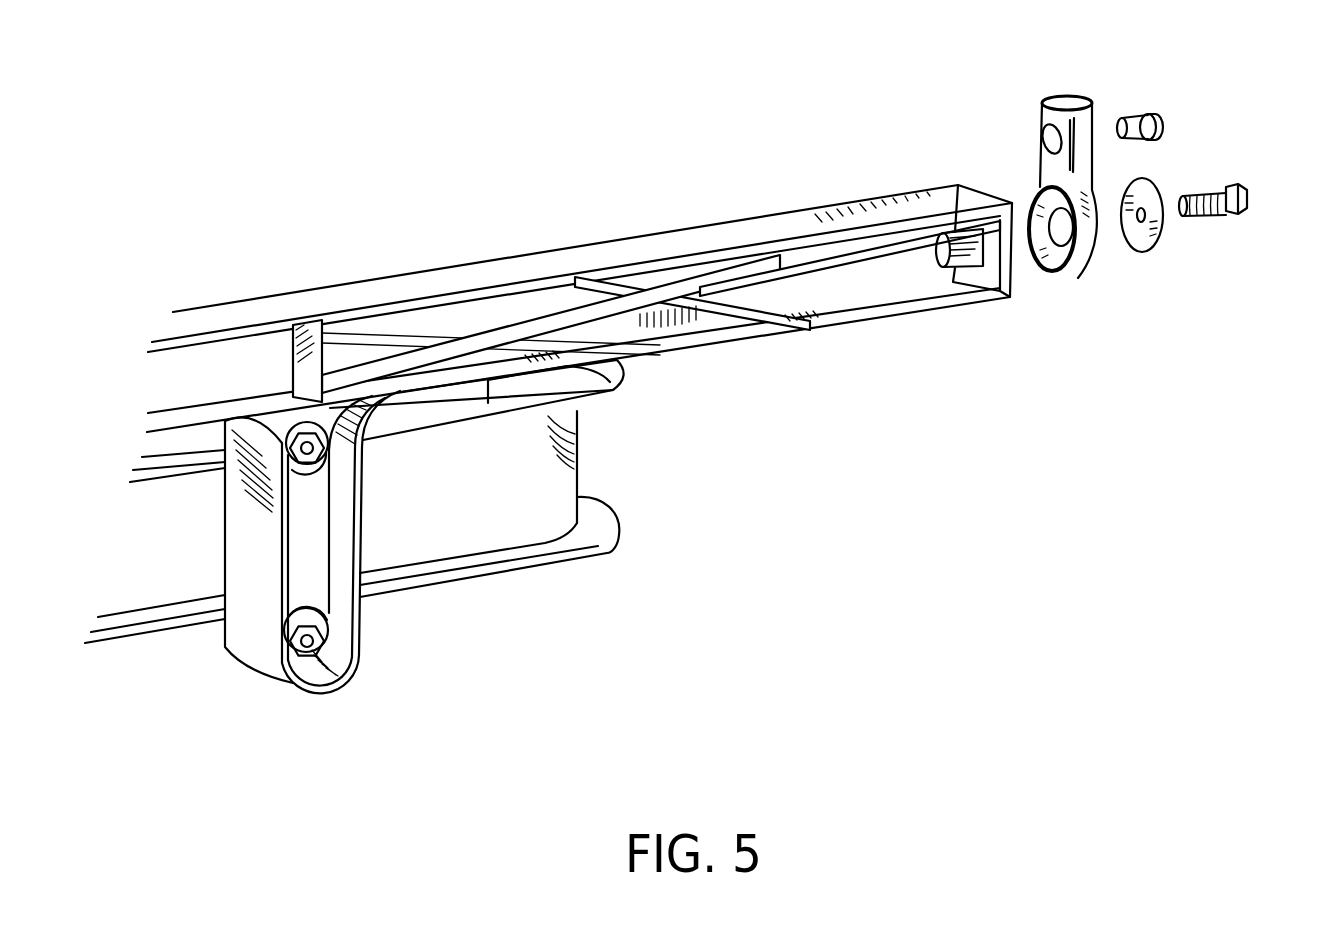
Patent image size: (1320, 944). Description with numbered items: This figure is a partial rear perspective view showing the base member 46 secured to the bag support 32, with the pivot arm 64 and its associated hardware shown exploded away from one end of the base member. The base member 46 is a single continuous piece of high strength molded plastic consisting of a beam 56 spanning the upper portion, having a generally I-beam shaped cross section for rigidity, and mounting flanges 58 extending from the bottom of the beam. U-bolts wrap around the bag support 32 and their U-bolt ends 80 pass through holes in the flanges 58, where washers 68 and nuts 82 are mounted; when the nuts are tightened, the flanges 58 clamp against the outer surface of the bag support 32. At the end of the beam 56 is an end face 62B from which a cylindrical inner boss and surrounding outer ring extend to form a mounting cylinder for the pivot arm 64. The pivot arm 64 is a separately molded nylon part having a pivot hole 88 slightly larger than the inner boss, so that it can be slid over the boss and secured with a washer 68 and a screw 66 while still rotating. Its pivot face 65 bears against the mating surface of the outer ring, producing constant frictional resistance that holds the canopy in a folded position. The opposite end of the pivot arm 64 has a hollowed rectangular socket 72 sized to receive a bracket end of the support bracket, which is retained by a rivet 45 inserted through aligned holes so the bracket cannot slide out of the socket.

The base member 46 is at (579, 281).
The beam 56 is at (579, 285).
The end face 62B is at (1007, 183).
The pivot arm 64 is at (1055, 201).
The hollowed rectangular socket 72 is at (1073, 97).
The rivet 45 is at (1148, 112).
The screw 66 is at (1240, 190).
The washer 68 is at (297, 478).
The pivot hole 88 is at (1070, 240).
The pivot face 65 is at (1095, 265).
The bag support 32 is at (590, 551).
The mounting flange 58 is at (243, 627).
The U-bolt end 80 is at (312, 457).
The nut 82 is at (300, 464).